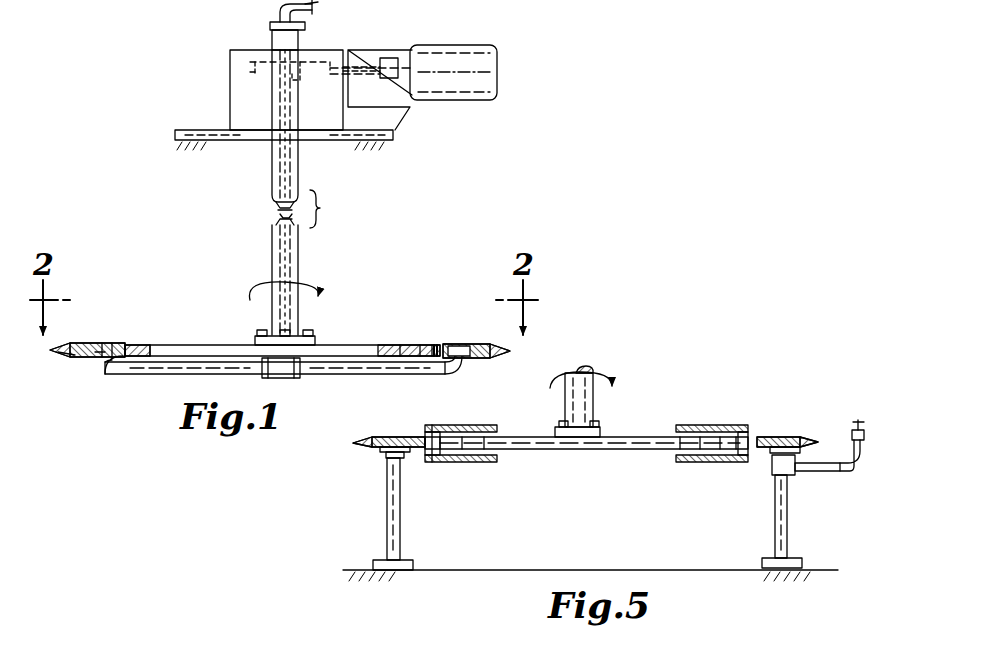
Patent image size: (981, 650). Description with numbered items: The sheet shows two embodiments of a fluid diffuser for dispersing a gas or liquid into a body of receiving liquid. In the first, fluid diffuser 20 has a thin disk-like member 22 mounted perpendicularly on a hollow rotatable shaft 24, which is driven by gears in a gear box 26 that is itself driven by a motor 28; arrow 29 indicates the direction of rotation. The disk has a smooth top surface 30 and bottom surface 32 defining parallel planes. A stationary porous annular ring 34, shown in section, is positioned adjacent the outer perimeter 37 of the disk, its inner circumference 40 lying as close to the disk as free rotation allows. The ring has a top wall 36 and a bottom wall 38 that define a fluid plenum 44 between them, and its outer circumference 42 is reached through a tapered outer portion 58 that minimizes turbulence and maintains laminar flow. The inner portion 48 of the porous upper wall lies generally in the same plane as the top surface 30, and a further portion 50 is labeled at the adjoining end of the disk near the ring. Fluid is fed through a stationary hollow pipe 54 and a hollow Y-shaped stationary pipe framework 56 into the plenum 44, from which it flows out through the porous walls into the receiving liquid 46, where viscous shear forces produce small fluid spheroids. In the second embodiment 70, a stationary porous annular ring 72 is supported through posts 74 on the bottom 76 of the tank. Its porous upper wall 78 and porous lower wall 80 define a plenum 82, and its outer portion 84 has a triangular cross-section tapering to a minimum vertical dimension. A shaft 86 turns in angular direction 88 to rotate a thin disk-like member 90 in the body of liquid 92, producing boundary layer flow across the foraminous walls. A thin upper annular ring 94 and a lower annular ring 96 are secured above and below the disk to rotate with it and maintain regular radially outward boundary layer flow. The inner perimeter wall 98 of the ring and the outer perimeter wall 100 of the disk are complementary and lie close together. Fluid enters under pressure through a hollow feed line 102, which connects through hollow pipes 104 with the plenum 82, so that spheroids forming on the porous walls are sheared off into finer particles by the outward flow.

In FIG. 1, the fluid diffuser 20 is at (142, 171).
In FIG. 1, the disk-like member 22 is at (200, 343).
In FIG. 1, the hollow rotatable shaft 24 is at (270, 172).
In FIG. 1, the gear box 26 is at (240, 80).
In FIG. 1, the motor 28 is at (465, 45).
In FIG. 1, the arrow 29 is at (305, 282).
In FIG. 1, the top surface 30 is at (392, 345).
In FIG. 1, the bottom surface 32 is at (345, 362).
In FIG. 1, the annular ring 34 is at (492, 342).
In FIG. 1, the top wall 36 is at (88, 343).
In FIG. 1, the outer perimeter 37 is at (145, 345).
In FIG. 1, the bottom wall 38 is at (97, 357).
In FIG. 1, the inner circumference 40 is at (116, 343).
In FIG. 1, the outer circumference 42 is at (55, 350).
In FIG. 1, the fluid plenum 44 is at (102, 343).
In FIG. 1, the receiving liquid 46 is at (175, 268).
In FIG. 1, the inner portion of porous upper wall 48 is at (462, 344).
In FIG. 1, the arm end 50 is at (432, 345).
In FIG. 1, the stationary hollow pipe 54 is at (282, 225).
In FIG. 1, the Y-shaped stationary pipe framework 56 is at (172, 374).
In FIG. 1, the tapered outer portion 58 is at (70, 357).
In FIG. 5, the fluid diffuser embodiment 70 is at (647, 388).
In FIG. 5, the porous annular ring 72 is at (798, 434).
In FIG. 5, the posts 74 is at (387, 510).
In FIG. 5, the tank bottom 76 is at (552, 566).
In FIG. 5, the porous upper wall 78 is at (395, 437).
In FIG. 5, the porous lower wall 80 is at (406, 458).
In FIG. 5, the plenum 82 is at (388, 452).
In FIG. 5, the outer portion 84 is at (810, 440).
In FIG. 5, the shaft 86 is at (584, 366).
In FIG. 5, the angular direction 88 is at (590, 380).
In FIG. 5, the disk-like member 90 is at (622, 449).
In FIG. 5, the body of liquid 92 is at (650, 528).
In FIG. 5, the upper annular ring 94 is at (475, 425).
In FIG. 5, the lower annular ring 96 is at (485, 462).
In FIG. 5, the inner perimeter wall 98 is at (432, 455).
In FIG. 5, the outer perimeter wall 100 is at (426, 436).
In FIG. 5, the hollow feed line 102 is at (864, 437).
In FIG. 5, the hollow pipes 104 is at (810, 470).